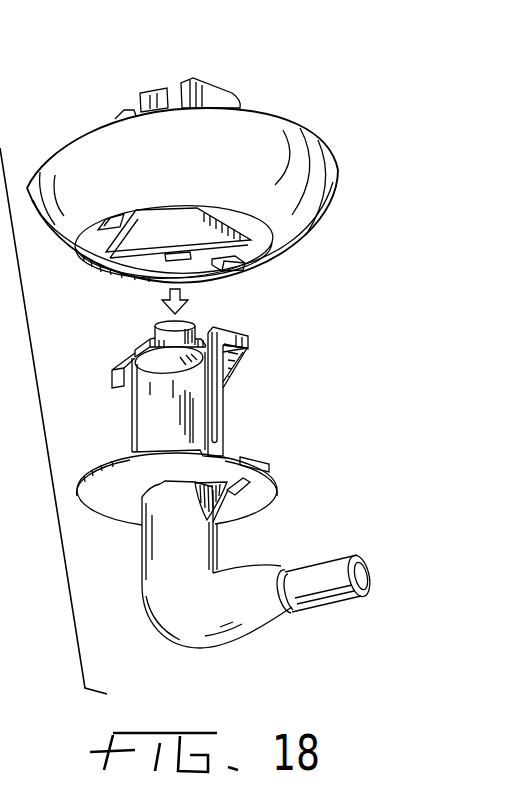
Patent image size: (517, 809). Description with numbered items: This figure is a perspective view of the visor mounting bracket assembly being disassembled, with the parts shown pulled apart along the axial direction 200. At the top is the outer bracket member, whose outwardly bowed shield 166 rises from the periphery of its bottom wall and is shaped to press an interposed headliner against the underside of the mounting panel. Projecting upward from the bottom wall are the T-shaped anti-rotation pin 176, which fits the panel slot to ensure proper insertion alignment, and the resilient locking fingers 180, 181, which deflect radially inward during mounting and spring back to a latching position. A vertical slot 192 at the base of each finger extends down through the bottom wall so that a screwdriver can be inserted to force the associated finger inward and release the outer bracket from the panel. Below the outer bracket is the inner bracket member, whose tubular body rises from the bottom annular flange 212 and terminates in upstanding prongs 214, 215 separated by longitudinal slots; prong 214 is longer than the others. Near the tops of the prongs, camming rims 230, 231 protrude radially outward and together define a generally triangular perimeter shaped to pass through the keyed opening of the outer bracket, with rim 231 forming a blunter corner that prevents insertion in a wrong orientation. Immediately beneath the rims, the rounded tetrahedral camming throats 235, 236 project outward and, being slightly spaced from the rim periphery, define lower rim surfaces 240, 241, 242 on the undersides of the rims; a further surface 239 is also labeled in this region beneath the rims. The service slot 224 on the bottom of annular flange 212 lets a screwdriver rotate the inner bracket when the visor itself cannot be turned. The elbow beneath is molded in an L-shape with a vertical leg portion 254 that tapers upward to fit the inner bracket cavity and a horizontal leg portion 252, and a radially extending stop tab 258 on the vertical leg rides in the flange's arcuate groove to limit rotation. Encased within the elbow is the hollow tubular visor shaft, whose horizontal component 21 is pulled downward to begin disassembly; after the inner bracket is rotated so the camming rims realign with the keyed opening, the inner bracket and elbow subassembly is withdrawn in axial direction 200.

The shield 166 is at (298, 220).
The anti-rotation pin 176 is at (154, 93).
The locking finger 180 is at (218, 98).
The locking finger 181 is at (125, 112).
The vertical slot 192 is at (112, 226).
The axial direction 200 is at (183, 291).
The camming rim 231 is at (151, 343).
The lower rim surface 241 is at (136, 352).
The camming throat 236 is at (163, 367).
The prong 214 is at (219, 410).
The lower rim surface 242 is at (120, 387).
The camming rim 230 is at (247, 339).
The brace corner 239 is at (251, 354).
The lower rim surface 240 is at (238, 358).
The camming throat 235 is at (240, 368).
The prong 215 is at (177, 420).
The annular flange 212 is at (112, 478).
The service slot 224 is at (250, 487).
The stop tab 258 is at (215, 503).
The vertical leg portion 254 is at (155, 570).
The horizontal leg portion 252 is at (253, 620).
The horizontal component 21 is at (332, 590).